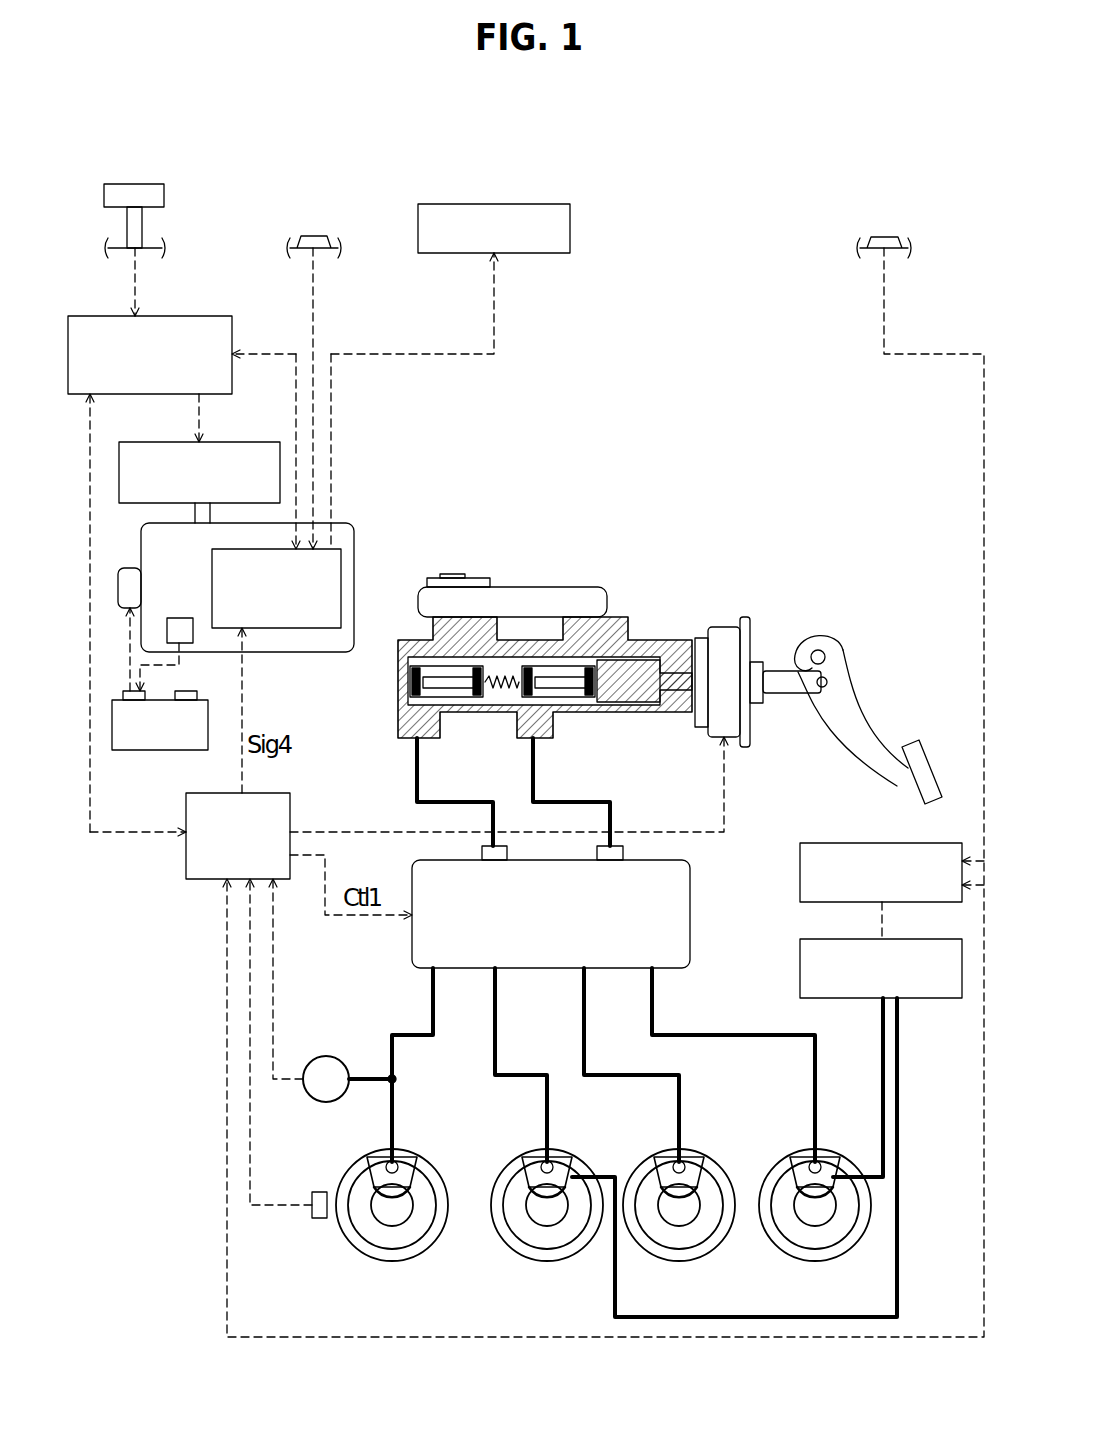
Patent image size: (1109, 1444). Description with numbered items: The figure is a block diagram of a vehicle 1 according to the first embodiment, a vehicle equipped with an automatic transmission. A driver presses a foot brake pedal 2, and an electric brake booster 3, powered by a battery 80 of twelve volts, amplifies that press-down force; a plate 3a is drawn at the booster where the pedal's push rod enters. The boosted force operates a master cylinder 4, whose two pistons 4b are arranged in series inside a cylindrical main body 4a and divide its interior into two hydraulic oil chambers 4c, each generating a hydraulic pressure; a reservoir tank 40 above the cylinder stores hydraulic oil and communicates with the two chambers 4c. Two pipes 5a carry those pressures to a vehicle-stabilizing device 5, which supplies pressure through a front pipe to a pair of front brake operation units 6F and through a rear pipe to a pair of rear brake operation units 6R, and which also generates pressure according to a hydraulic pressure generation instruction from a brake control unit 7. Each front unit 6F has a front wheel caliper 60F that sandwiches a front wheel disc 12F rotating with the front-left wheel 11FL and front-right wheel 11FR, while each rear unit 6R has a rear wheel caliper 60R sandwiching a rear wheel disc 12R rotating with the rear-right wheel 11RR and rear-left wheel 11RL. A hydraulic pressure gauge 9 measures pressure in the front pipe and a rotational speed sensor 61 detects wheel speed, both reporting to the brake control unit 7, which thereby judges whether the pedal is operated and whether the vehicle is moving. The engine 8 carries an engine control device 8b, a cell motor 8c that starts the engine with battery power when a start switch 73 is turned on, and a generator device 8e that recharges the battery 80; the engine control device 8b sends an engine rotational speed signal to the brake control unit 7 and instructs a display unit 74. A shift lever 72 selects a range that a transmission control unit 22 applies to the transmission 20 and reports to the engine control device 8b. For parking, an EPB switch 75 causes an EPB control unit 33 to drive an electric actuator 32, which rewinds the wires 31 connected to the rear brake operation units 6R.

The vehicle 1 is at (686, 156).
The foot brake pedal 2 is at (860, 690).
The electric brake booster 3 is at (750, 663).
The sensor plate 3a is at (720, 627).
The master cylinder 4 is at (513, 670).
The main body 4a is at (642, 712).
The piston 4b is at (455, 698).
The hydraulic oil chamber 4c is at (410, 683).
The vehicle-stabilizing device 5 is at (690, 907).
The pipe 5a is at (423, 800).
The front brake operation unit 6F is at (413, 1160).
The rear brake operation unit 6R is at (568, 1160).
The brake control unit 7 is at (290, 806).
The engine 8 is at (354, 545).
The engine control device 8b is at (212, 562).
The cell motor 8c is at (130, 568).
The generator device 8e is at (179, 618).
The hydraulic pressure gauge 9 is at (327, 1056).
The front-left wheel 11FL is at (445, 1225).
The rear-right wheel 11RR is at (595, 1232).
The front-right wheel 11FR is at (730, 1225).
The rear-left wheel 11RL is at (868, 1225).
The front wheel disc 12F is at (393, 1249).
The rear wheel disc 12R is at (533, 1249).
The transmission 20 is at (240, 442).
The transmission control unit 22 is at (182, 316).
The wire 31 is at (883, 1092).
The electric actuator 32 is at (800, 958).
The EPB control unit 33 is at (800, 862).
The reservoir tank 40 is at (530, 587).
The front wheel caliper 60F is at (375, 1160).
The rear wheel caliper 60R is at (530, 1160).
The rotational speed sensor 61 is at (319, 1192).
The shift lever 72 is at (135, 184).
The start switch 73 is at (314, 236).
The display unit 74 is at (496, 204).
The EPB switch 75 is at (884, 237).
The battery 80 is at (145, 750).